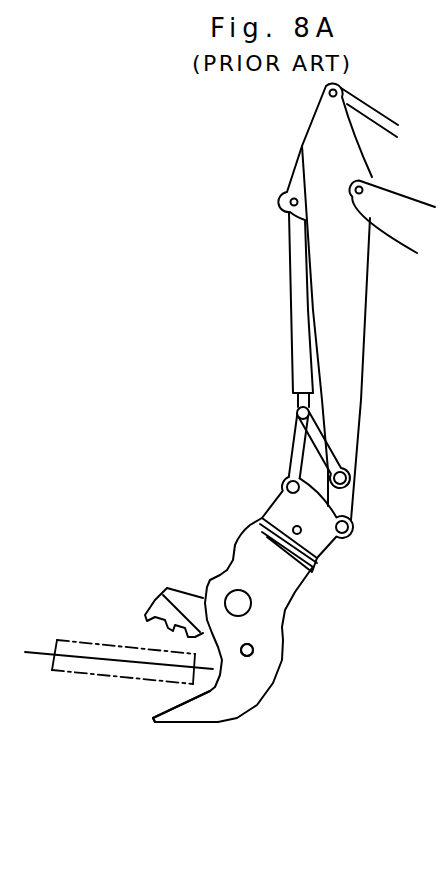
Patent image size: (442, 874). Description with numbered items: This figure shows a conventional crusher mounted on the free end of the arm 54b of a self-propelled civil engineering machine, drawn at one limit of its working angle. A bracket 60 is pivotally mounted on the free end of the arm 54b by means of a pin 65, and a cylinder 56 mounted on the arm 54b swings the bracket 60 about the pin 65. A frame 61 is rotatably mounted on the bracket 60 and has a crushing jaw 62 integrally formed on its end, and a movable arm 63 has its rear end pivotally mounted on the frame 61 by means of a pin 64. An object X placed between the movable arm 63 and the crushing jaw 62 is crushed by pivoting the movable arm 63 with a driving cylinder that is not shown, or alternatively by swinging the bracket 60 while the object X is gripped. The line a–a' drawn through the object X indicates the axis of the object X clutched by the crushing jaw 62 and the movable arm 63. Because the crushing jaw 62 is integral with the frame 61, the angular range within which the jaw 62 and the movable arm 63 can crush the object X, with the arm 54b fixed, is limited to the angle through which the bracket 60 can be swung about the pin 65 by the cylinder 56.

The arm 54b is at (357, 344).
The cylinder 56 is at (293, 291).
The bracket 60 is at (280, 505).
The pin 65 is at (350, 525).
The frame 61 is at (283, 597).
The crushing jaw 62 is at (187, 720).
The movable arm 63 is at (167, 593).
The pin 64 is at (255, 650).
The line a–a' a is at (240, 664).
The object X is at (117, 674).